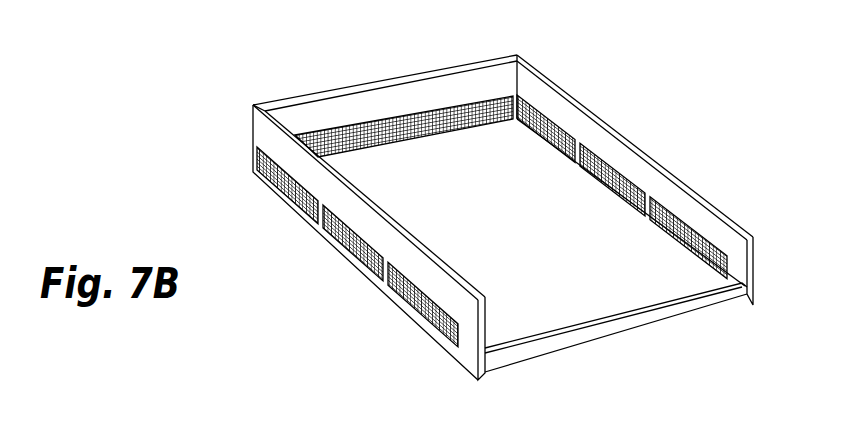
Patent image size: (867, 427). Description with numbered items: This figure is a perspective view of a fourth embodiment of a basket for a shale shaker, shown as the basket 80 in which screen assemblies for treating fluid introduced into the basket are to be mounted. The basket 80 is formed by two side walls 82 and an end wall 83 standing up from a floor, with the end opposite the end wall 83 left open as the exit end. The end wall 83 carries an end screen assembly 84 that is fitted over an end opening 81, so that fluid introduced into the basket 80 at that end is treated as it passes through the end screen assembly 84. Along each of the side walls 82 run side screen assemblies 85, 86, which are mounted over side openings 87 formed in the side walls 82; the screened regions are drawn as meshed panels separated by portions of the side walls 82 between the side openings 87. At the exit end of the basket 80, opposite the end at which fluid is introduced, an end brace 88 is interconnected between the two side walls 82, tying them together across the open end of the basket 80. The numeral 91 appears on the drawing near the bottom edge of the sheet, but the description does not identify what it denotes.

The basket 80 is at (336, 284).
The end opening 81 is at (404, 86).
The side walls 82 is at (717, 233).
The end wall 83 is at (385, 86).
The end screen assembly 84 is at (457, 113).
The side screen assembly 85 is at (338, 253).
The side screen assembly 86 is at (533, 110).
The side openings 87 is at (267, 178).
The end brace 88 is at (633, 321).
The base plate front edge 91 is at (248, 417).